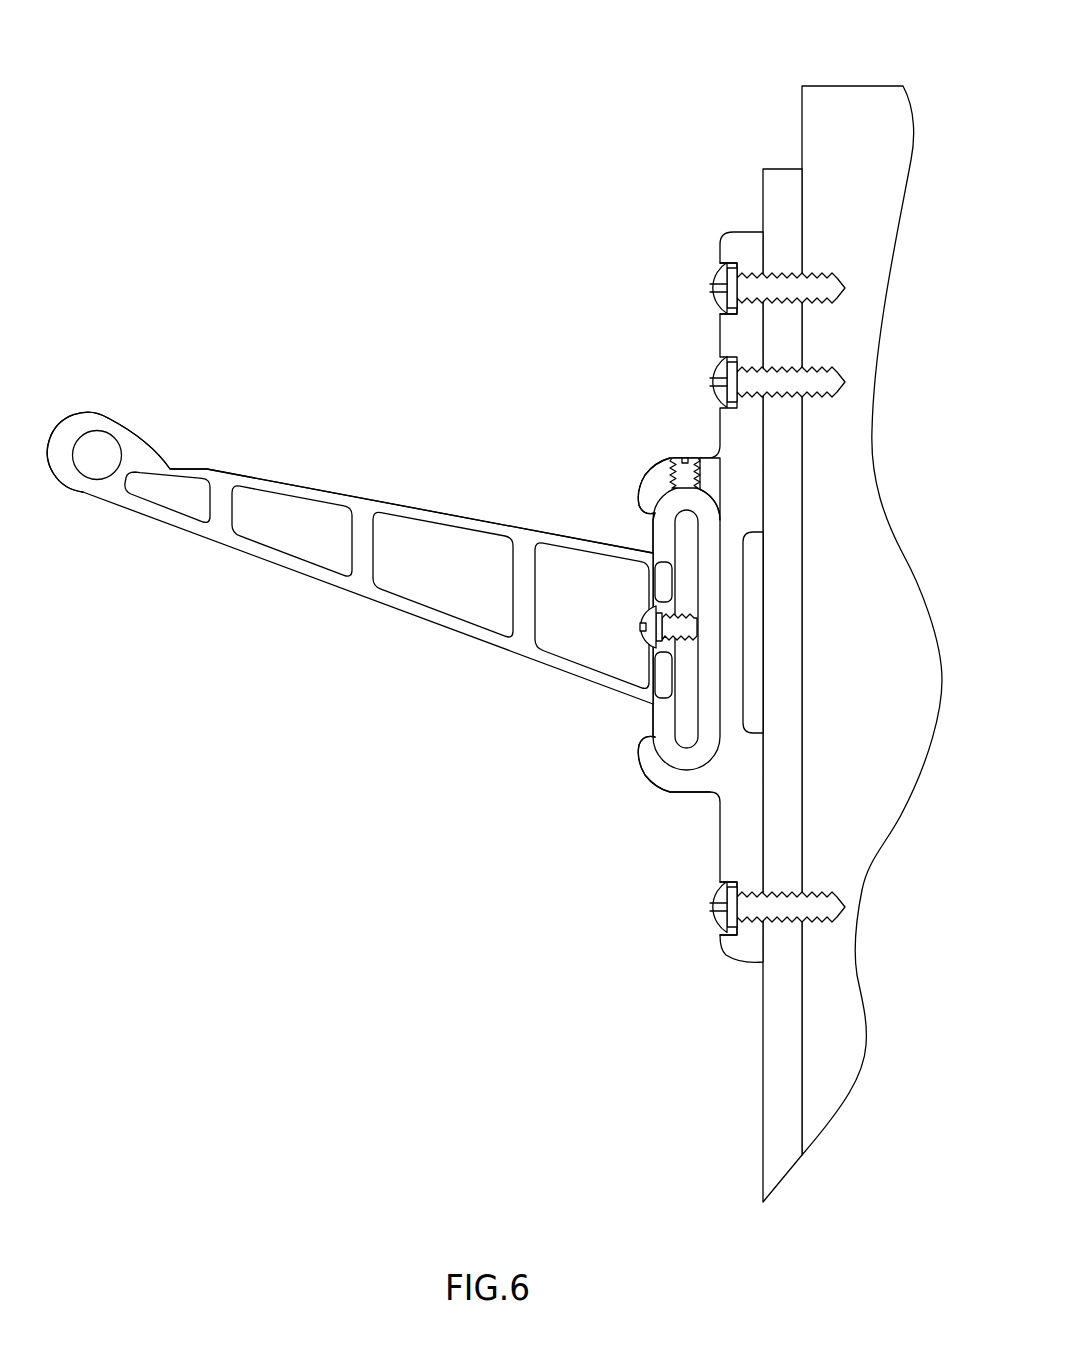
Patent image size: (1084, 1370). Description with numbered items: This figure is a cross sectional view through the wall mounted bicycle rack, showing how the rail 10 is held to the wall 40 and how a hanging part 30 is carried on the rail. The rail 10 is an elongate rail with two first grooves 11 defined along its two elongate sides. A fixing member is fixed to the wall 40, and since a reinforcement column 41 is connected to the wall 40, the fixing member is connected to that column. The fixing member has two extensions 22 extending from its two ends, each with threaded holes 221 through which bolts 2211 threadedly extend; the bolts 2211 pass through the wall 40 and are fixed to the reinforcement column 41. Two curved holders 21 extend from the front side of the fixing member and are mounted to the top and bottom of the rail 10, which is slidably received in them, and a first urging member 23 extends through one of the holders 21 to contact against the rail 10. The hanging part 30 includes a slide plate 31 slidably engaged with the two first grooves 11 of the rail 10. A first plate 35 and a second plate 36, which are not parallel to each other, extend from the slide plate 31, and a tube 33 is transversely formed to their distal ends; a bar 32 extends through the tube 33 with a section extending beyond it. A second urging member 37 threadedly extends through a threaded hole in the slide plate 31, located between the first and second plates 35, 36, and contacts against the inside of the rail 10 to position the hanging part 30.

The rail 10 is at (652, 735).
The first groove 11 is at (655, 760).
The holder 21 is at (643, 485).
The extension 22 is at (752, 250).
The threaded hole 221 is at (714, 285).
The bolt 2211 is at (735, 266).
The first urging member 23 is at (686, 457).
The hanging part 30 is at (350, 523).
The slide plate 31 is at (660, 676).
The bar 32 is at (101, 457).
The tube 33 is at (73, 426).
The first plate 35 is at (302, 486).
The second plate 36 is at (350, 600).
The second urging member 37 is at (640, 622).
The wall 40 is at (783, 172).
The reinforcement column 41 is at (828, 92).